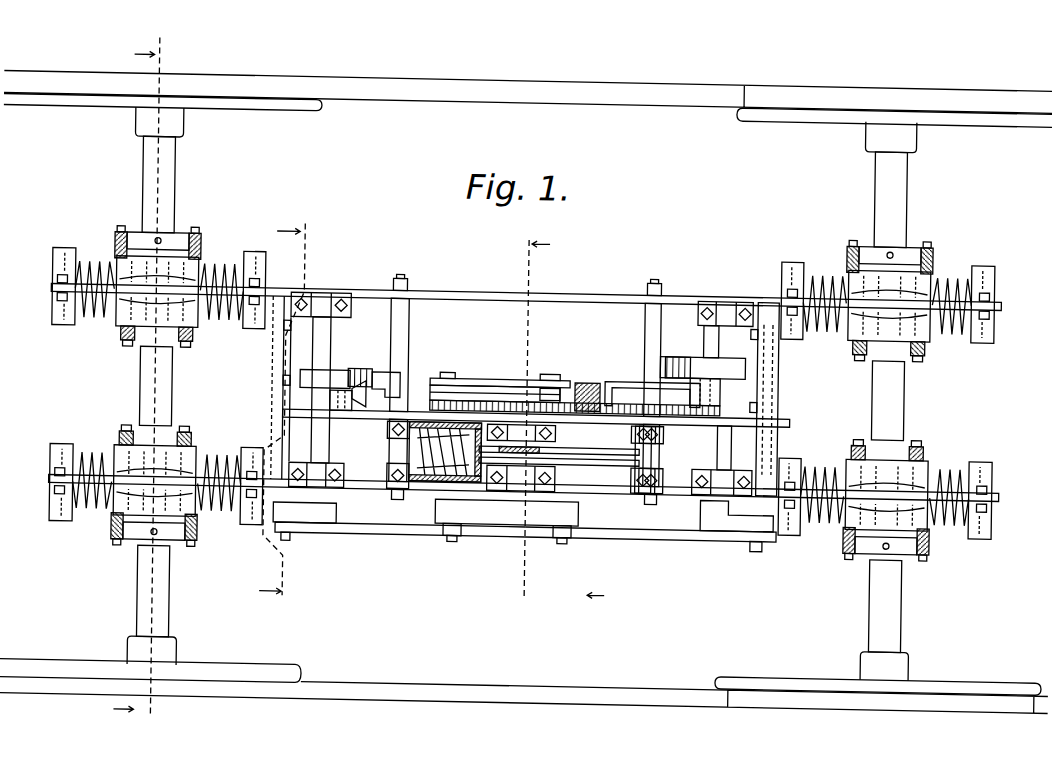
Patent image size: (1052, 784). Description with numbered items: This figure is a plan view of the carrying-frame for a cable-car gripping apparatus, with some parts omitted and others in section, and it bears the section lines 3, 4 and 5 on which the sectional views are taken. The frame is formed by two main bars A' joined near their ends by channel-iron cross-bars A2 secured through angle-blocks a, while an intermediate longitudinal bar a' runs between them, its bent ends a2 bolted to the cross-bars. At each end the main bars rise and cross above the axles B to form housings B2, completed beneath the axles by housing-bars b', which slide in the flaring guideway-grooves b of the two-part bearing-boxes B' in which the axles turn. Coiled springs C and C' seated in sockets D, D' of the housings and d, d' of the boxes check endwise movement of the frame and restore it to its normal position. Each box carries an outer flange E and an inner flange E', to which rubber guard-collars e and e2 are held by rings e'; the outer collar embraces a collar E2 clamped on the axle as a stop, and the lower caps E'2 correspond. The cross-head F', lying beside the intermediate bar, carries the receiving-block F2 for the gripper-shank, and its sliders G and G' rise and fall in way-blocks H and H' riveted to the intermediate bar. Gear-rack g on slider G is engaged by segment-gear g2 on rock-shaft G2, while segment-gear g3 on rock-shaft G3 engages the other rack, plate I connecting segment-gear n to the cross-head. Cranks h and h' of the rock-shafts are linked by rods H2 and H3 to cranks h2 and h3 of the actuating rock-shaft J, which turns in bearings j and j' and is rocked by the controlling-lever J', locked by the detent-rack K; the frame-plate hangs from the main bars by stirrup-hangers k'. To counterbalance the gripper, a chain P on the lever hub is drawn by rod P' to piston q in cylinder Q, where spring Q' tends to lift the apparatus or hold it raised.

The section line 3 is at (139, 384).
The section line 4 is at (283, 408).
The section line 5 is at (561, 417).
The axle B is at (521, 394).
The sectional bearing-box B' is at (502, 474).
The housing B2 is at (985, 335).
The coiled spring C is at (512, 377).
The coiled spring C' is at (522, 351).
The socket or seat D is at (521, 389).
The socket D' is at (522, 386).
The annular flange E is at (530, 387).
The annular flange E' is at (491, 385).
The collar E2 is at (163, 244).
The lower cap plate E'2 is at (509, 549).
The guard-collar e is at (509, 399).
The flange ring or washer e' is at (520, 390).
The guard-collar e2 is at (118, 238).
The annular groove or socket d is at (208, 421).
The socket d' is at (516, 430).
The guideway-groove b is at (37, 494).
The housing-bar b' is at (1002, 511).
The main bar A' is at (524, 403).
The cross-bar A2 is at (778, 376).
The angle-block a is at (522, 379).
The intermediate longitudinal bar a' is at (535, 424).
The bent end a2 is at (524, 367).
The link or rod H2 is at (372, 537).
The link or rod H3 is at (684, 537).
The crank h is at (305, 504).
The crank h' is at (736, 516).
The crank h2 is at (452, 537).
The crank h3 is at (556, 537).
The chain P is at (559, 464).
The bed plate P' is at (506, 508).
The casing or cylinder Q is at (444, 468).
The coiled spring Q' is at (476, 472).
The reciprocating plate or piston q is at (428, 440).
The actuating rock-shaft J is at (521, 478).
The controlling-lever J' is at (521, 431).
The box-bearing j is at (528, 477).
The box-bearing j' is at (530, 423).
The detent-rack K is at (627, 459).
The stirrup-hanger k' is at (531, 395).
The slider G is at (365, 394).
The slider G' is at (689, 392).
The rock-shaft G2 is at (322, 338).
The rock-shaft G3 is at (706, 352).
The toothed bar or gear-rack g is at (386, 370).
The segment-gear g2 is at (358, 366).
The segment-gear g3 is at (697, 368).
The way-block H is at (340, 412).
The way-block H' is at (706, 443).
The plate I is at (612, 380).
The segment-gear n is at (588, 380).
The carrier-bar or cross-head F' is at (567, 382).
The receiving-block F2 is at (458, 396).